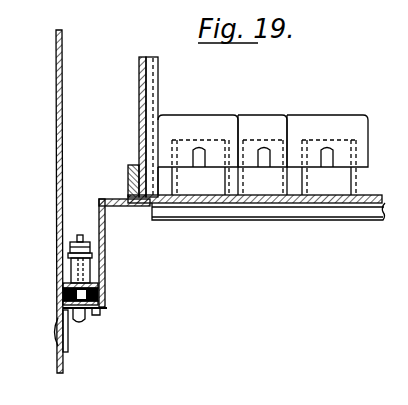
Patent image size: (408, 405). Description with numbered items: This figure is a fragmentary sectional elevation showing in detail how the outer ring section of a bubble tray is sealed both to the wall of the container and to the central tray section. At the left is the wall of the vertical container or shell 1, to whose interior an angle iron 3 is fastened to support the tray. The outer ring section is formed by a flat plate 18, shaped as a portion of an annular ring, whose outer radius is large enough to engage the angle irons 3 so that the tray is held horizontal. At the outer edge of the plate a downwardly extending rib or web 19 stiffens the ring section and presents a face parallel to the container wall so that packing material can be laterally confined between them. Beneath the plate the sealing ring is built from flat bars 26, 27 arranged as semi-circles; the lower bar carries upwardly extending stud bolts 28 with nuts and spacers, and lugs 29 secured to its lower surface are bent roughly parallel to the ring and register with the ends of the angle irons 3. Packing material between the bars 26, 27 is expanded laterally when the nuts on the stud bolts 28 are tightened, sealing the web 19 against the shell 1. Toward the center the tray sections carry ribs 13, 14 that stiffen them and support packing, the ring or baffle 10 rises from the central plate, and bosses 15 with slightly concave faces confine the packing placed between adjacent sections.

The vertical container or shell 1 is at (56, 129).
The ring or baffle 10 is at (139, 101).
The bosses 15 is at (158, 88).
The rib 13 is at (293, 207).
The rib 14 is at (325, 220).
The flat plate 18 is at (115, 210).
The downwardly extending rib or web 19 is at (105, 263).
The stud bolts 28 is at (77, 243).
The flat bar 26 is at (63, 279).
The flat bar 27 is at (63, 303).
The angle irons 3 is at (102, 318).
The lugs 29 is at (77, 323).